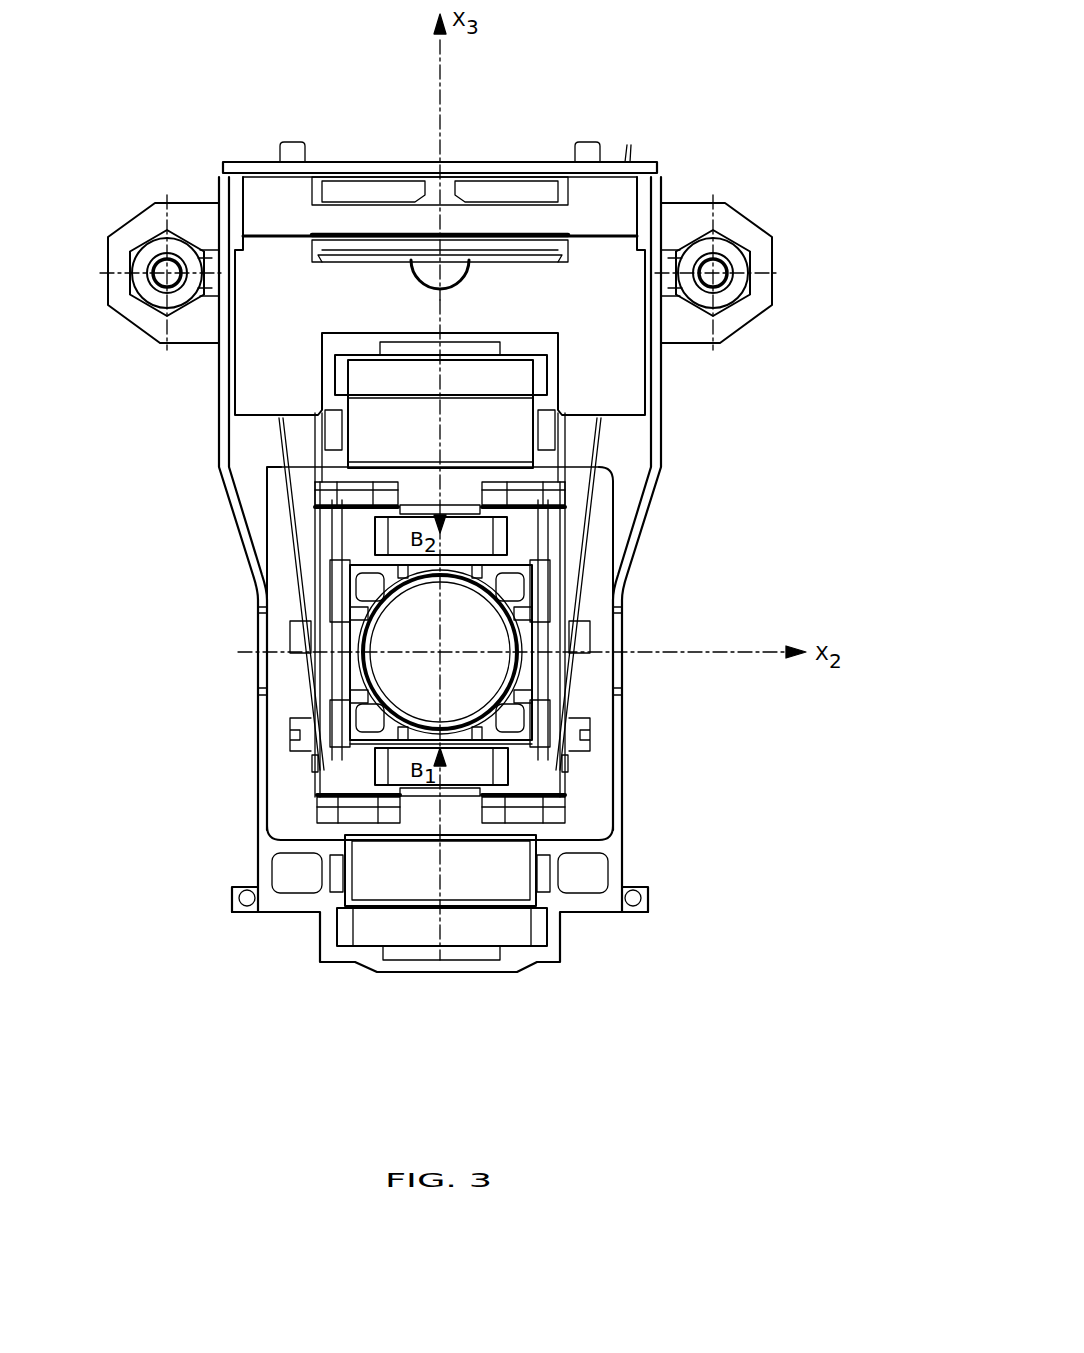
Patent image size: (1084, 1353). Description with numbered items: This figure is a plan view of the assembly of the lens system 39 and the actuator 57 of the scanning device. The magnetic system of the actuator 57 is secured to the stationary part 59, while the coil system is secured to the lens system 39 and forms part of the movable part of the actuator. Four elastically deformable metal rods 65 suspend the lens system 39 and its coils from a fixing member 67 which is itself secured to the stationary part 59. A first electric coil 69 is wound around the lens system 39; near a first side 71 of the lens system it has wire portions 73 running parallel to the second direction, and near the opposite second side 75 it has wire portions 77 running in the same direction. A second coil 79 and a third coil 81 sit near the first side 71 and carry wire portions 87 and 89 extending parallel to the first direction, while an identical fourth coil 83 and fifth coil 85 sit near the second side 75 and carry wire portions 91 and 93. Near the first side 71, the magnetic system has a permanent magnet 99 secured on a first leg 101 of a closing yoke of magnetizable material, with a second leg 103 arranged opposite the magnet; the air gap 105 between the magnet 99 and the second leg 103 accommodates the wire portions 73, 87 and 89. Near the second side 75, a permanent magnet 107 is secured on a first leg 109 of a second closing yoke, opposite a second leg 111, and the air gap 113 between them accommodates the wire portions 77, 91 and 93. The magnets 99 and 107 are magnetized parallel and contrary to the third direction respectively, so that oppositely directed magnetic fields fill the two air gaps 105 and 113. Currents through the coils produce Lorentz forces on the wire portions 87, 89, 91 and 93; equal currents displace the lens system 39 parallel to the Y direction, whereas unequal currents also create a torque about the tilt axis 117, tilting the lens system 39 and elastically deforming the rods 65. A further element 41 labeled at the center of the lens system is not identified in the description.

The lens system 39 is at (473, 684).
The bearing ring 41 is at (440, 652).
The actuator 57 is at (283, 795).
The stationary part 59 is at (652, 456).
The elastically deformable metal rods 65 is at (279, 433).
The fixing member 67 is at (612, 377).
The first electric coil 69 is at (349, 770).
The first side 71 is at (463, 742).
The wire portions 73 is at (467, 800).
The second side 75 is at (463, 567).
The wire portions 77 is at (422, 508).
The second electric coil 79 is at (350, 815).
The third electric coil 81 is at (530, 815).
The fourth electric coil 83 is at (321, 493).
The fifth electric coil 85 is at (529, 496).
The wire portions 87 is at (397, 812).
The wire portions 89 is at (490, 810).
The wire portions 91 is at (387, 493).
The wire portions 93 is at (490, 493).
The permanent magnet 99 is at (465, 890).
The first leg 101 is at (405, 932).
The second leg 103 is at (473, 772).
The air gap 105 is at (422, 817).
The permanent magnet 107 is at (418, 417).
The first leg 109 is at (467, 373).
The second leg 111 is at (481, 537).
The air gap 113 is at (450, 488).
The tilt axis 117 is at (440, 302).